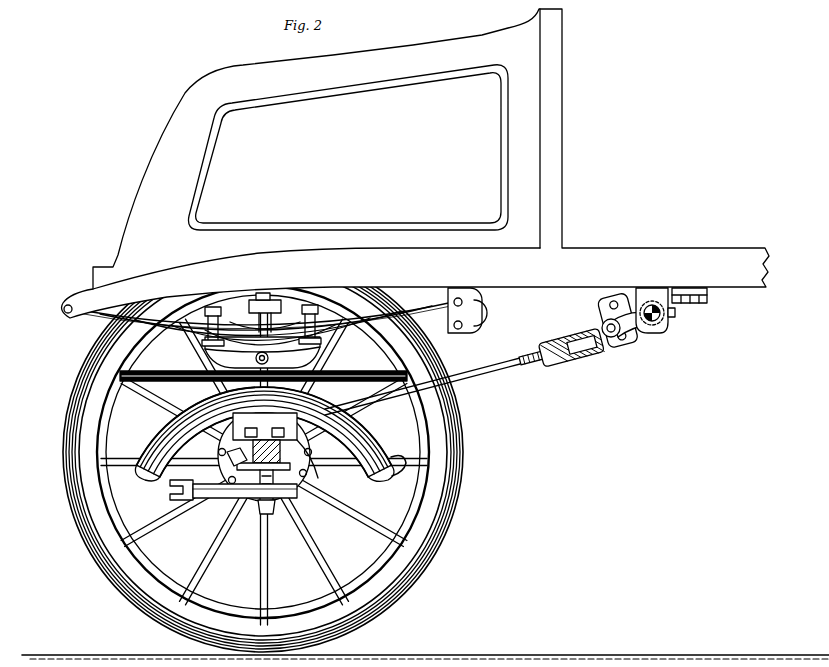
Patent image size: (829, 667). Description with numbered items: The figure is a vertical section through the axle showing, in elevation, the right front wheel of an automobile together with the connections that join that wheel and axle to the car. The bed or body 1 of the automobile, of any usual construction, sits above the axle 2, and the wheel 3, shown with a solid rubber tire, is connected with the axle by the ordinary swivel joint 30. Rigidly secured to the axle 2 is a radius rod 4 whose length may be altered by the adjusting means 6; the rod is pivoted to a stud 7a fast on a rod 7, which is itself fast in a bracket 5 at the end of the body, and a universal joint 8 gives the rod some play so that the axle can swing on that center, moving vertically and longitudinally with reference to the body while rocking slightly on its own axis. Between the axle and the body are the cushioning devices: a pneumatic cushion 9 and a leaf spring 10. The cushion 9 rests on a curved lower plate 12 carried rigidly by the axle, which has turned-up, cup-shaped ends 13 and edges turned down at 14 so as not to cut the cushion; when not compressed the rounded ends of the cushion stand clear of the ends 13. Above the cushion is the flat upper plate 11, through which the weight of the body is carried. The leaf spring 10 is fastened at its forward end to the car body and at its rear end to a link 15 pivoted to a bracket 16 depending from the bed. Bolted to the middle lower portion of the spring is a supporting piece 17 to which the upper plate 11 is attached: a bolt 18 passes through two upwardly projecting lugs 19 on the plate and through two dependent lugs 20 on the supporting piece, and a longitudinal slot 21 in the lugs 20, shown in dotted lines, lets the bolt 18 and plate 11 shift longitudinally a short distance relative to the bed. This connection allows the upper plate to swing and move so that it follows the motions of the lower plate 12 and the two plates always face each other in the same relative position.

The bed or body 1 is at (657, 254).
The axle 2 is at (253, 502).
The wheel 3 is at (420, 568).
The radius rod 4 is at (485, 381).
The bracket 5 is at (687, 300).
The means for adjusting the length of the radius rods 6 is at (580, 354).
The rod 7 is at (652, 325).
The stud 7a is at (622, 328).
The universal joint 8 is at (624, 348).
The pneumatic cushion 9 is at (405, 432).
The leaf spring 10 is at (412, 312).
The upper plate 11 is at (127, 414).
The lower plate 12 is at (428, 492).
The cup shaped ends 13 is at (408, 455).
The turned down edges 14 is at (320, 458).
The link 15 is at (483, 301).
The bracket 16 is at (484, 314).
The supporting piece 17 is at (311, 304).
The bolt 18 is at (247, 332).
The upwardly projecting lugs 19 is at (212, 328).
The dependent lugs 20 is at (256, 308).
The longitudinal slot 21 is at (265, 313).
The swivel joint 30 is at (270, 510).